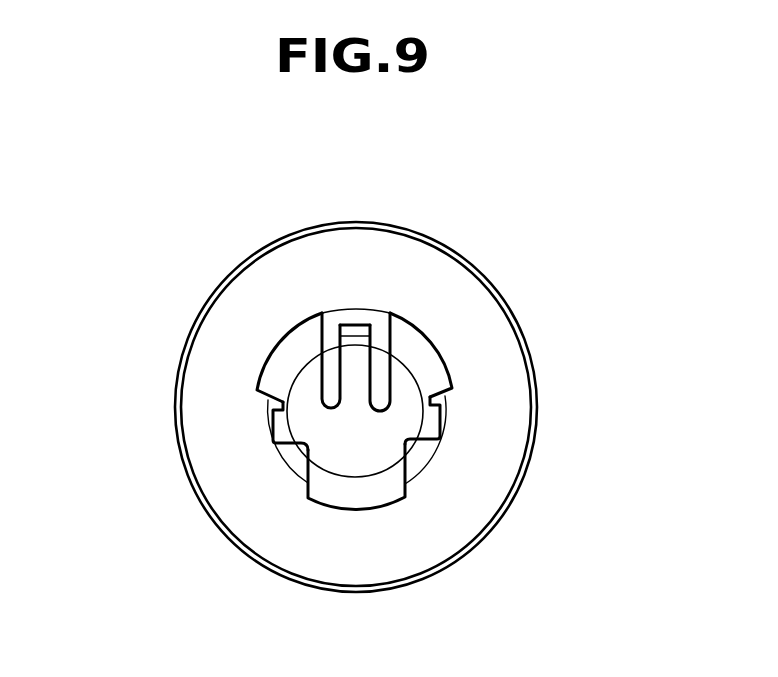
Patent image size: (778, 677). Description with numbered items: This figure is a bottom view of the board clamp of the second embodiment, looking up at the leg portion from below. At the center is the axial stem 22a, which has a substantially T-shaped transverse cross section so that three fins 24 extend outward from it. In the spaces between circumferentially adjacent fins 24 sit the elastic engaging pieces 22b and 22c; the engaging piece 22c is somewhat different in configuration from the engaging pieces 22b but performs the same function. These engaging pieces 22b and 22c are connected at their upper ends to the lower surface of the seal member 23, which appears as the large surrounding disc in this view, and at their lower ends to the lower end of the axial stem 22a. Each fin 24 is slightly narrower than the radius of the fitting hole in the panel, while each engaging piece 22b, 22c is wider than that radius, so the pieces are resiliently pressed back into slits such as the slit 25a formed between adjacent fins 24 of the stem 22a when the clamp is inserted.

The seal member 23 is at (522, 333).
The axial stem 22a is at (323, 452).
The elastic engaging pieces 22b is at (278, 343).
The fins 24 is at (355, 318).
The slit 25a is at (377, 338).
The elastic engaging piece 22c is at (375, 510).